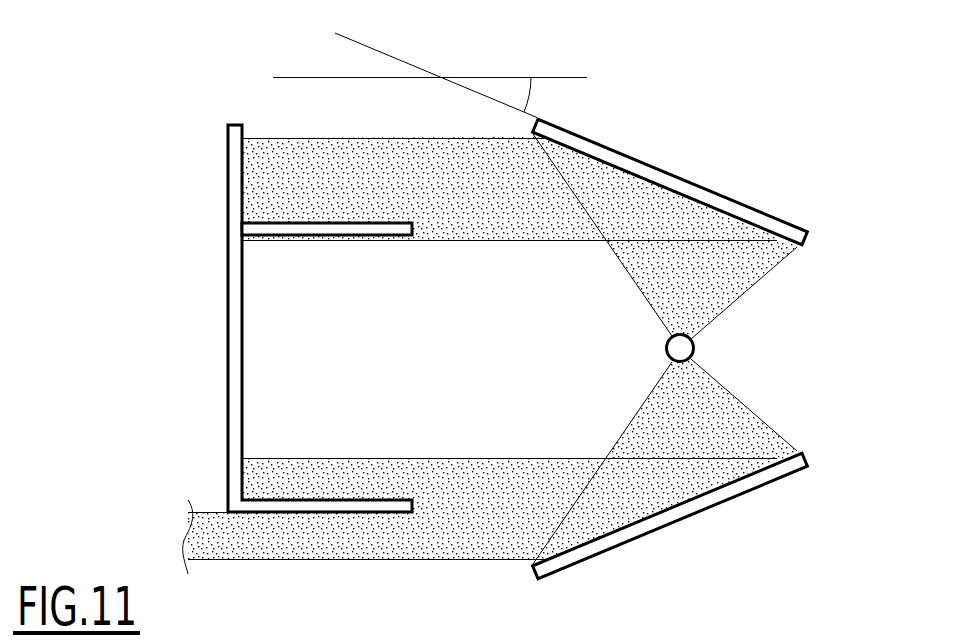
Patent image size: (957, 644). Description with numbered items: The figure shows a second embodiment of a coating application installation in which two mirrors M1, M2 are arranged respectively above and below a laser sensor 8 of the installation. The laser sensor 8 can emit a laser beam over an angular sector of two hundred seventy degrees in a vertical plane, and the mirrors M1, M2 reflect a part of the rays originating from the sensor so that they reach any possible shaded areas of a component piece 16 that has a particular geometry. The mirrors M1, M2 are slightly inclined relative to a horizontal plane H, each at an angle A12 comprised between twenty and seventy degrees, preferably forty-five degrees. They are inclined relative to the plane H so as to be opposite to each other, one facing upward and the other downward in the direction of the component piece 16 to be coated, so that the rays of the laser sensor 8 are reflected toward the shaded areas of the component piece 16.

The component piece 16 is at (236, 341).
The laser sensor 8 is at (683, 348).
The mirror M1 is at (672, 180).
The mirror M2 is at (695, 507).
The horizontal plane H is at (305, 77).
The angle A12 is at (455, 75).